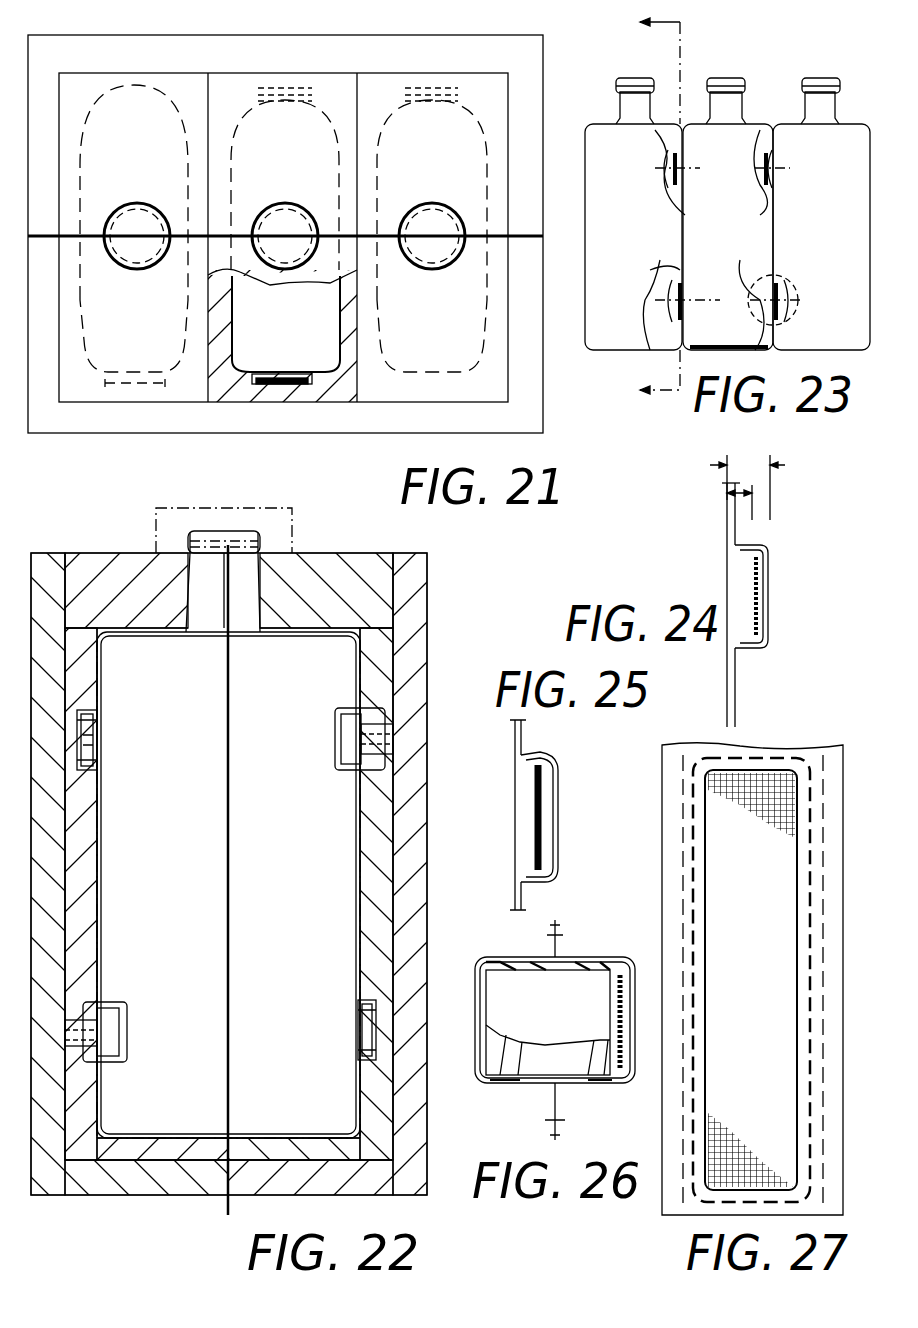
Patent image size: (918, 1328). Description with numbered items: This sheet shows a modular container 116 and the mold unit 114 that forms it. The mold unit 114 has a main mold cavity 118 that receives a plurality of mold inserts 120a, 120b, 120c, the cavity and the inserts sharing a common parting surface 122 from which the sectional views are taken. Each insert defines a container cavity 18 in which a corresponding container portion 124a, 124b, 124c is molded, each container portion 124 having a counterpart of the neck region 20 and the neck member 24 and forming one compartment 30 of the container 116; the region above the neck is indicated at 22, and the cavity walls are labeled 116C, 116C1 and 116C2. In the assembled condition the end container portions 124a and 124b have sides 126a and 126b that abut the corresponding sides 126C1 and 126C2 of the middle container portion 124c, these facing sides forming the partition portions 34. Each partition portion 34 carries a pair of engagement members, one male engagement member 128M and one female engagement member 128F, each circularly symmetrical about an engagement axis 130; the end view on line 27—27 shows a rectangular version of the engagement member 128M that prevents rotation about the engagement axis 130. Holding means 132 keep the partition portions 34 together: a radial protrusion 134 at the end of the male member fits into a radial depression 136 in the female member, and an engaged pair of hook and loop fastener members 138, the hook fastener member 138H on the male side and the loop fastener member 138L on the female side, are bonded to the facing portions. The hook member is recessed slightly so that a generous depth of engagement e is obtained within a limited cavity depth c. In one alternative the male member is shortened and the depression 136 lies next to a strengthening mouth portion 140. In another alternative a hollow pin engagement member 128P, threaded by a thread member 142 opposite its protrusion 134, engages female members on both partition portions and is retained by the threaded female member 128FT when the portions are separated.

In FIG. 21, the container cavity 18 is at (86, 321).
In FIG. 21, the neck region 20 is at (445, 258).
In FIG. 22, the neck region 20 is at (256, 617).
In FIG. 22, the closure region 22 is at (156, 520).
In FIG. 22, the neck member 24 is at (200, 633).
In FIG. 23, the neck member 24 is at (652, 104).
In FIG. 23, the section line 27— 27 is at (630, 216).
In FIG. 23, the compartment 30 is at (742, 283).
In FIG. 23, the partition portion 34 is at (668, 268).
In FIG. 25, the partition portion 34 is at (515, 742).
In FIG. 27, the partition portion 34 is at (685, 910).
In FIG. 21, the mold unit 114 is at (292, 436).
In FIG. 22, the mold unit 114 is at (88, 1205).
In FIG. 23, the container 116 is at (588, 124).
In FIG. 27, the container 116 is at (665, 1220).
In FIG. 21, the mold cavity bottom wall 116C is at (252, 345).
In FIG. 22, the mold cavity bottom wall 116C is at (144, 1130).
In FIG. 22, the mold cavity side wall 116C1 is at (104, 938).
In FIG. 22, the mold cavity side wall 116C2 is at (360, 863).
In FIG. 21, the main mold cavity 118 is at (330, 392).
In FIG. 22, the main mold cavity 118 is at (97, 840).
In FIG. 21, the mold insert 120a is at (134, 228).
In FIG. 21, the mold insert 120b is at (432, 230).
In FIG. 21, the mold insert 120c is at (285, 179).
In FIG. 21, the common parting surface 122 is at (174, 250).
In FIG. 22, the common parting surface 122 is at (226, 1210).
In FIG. 27, the container portion 124 is at (668, 1218).
In FIG. 23, the container portion 124a is at (602, 350).
In FIG. 23, the container portion 124b is at (860, 350).
In FIG. 23, the container portion 124c is at (708, 350).
In FIG. 23, the side 126a is at (684, 205).
In FIG. 23, the side 126b is at (773, 238).
In FIG. 23, the side 126C1 is at (682, 238).
In FIG. 23, the side 126C2 is at (776, 240).
In FIG. 21, the male engagement member 128M is at (122, 410).
In FIG. 22, the male engagement member 128M is at (99, 753).
In FIG. 23, the male engagement member 128M is at (645, 292).
In FIG. 24, the male engagement member 128M is at (728, 540).
In FIG. 25, the male engagement member 128M is at (530, 818).
In FIG. 27, the male engagement member 128M is at (770, 961).
In FIG. 22, the female engagement member 128F is at (127, 1020).
In FIG. 23, the female engagement member 128F is at (808, 198).
In FIG. 24, the female engagement member 128F is at (770, 565).
In FIG. 25, the female engagement member 128F is at (560, 835).
In FIG. 26, the female engagement member 128F is at (596, 1085).
In FIG. 26, the female engagement member 128FT is at (515, 957).
In FIG. 26, the pin engagement member 128P is at (598, 957).
In FIG. 23, the engagement axis 130 is at (648, 165).
In FIG. 24, the engagement axis 130 is at (780, 592).
In FIG. 27, the engagement axis 130 is at (752, 978).
In FIG. 24, the holding means 132 is at (766, 535).
In FIG. 24, the radial protrusion 134 is at (760, 650).
In FIG. 25, the radial protrusion 134 is at (540, 752).
In FIG. 26, the radial protrusion 134 is at (580, 1090).
In FIG. 27, the radial protrusion 134 is at (810, 925).
In FIG. 24, the radial depression 136 is at (745, 552).
In FIG. 25, the radial depression 136 is at (530, 780).
In FIG. 27, the hook-loop fastener members 138 is at (758, 820).
In FIG. 24, the hook fastener member 138H is at (755, 578).
In FIG. 25, the hook fastener member 138H is at (535, 838).
In FIG. 24, the loop fastener member 138L is at (772, 625).
In FIG. 25, the loop fastener member 138L is at (560, 790).
In FIG. 25, the mouth portion 140 is at (530, 762).
In FIG. 26, the thread member 142 is at (505, 1085).
In FIG. 24, the cavity depth c is at (747, 486).
In FIG. 24, the depth of engagement e is at (725, 501).